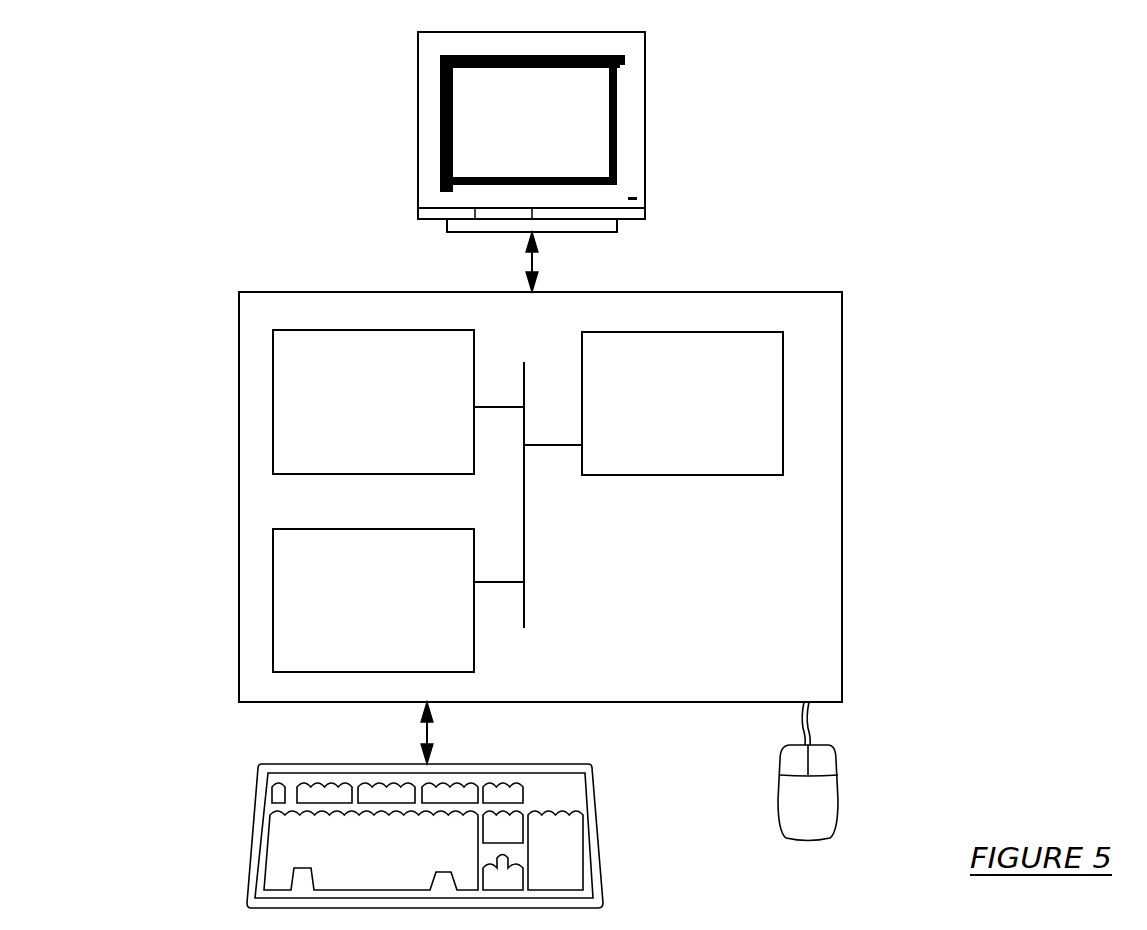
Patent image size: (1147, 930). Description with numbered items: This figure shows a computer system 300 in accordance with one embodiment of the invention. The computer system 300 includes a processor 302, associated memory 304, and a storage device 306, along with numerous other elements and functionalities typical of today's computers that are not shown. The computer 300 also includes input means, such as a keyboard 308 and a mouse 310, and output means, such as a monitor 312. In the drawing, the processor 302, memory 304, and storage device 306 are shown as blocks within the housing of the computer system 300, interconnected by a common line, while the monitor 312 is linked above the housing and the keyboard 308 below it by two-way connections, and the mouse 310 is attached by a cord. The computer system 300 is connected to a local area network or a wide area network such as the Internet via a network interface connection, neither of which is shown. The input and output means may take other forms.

The computer system 300 is at (855, 165).
The processor 302 is at (679, 414).
The associated memory 304 is at (356, 414).
The storage device 306 is at (352, 611).
The keyboard 308 is at (346, 871).
The mouse 310 is at (788, 811).
The monitor 312 is at (508, 126).